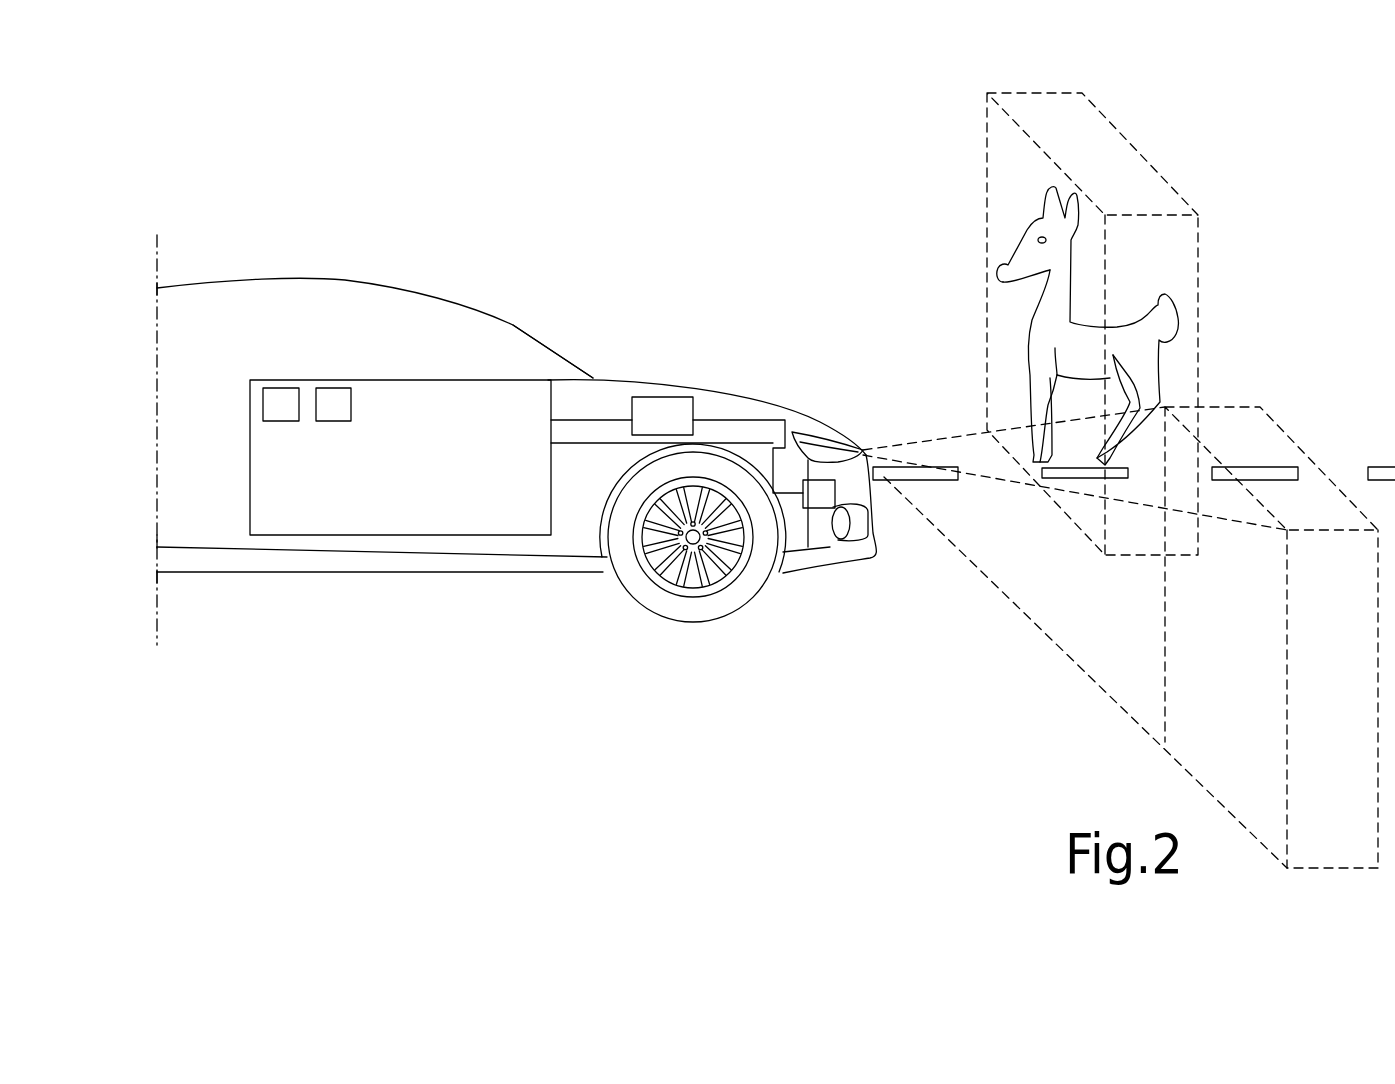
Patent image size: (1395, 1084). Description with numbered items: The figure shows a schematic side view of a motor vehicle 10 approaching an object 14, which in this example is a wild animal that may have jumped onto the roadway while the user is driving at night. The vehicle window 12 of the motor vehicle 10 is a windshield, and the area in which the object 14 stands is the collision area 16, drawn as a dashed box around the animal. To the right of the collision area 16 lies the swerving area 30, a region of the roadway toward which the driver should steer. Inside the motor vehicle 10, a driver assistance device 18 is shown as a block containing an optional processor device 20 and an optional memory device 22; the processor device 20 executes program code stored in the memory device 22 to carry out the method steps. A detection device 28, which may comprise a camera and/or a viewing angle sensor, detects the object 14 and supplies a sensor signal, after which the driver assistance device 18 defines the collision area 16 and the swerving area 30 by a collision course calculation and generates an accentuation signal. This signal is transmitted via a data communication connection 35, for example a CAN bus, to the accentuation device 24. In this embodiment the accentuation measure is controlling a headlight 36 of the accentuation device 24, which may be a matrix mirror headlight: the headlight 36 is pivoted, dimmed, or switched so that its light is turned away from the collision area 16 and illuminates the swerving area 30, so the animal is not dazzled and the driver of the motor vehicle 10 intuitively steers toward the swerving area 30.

The motor vehicle 10 is at (350, 280).
The vehicle window 12 is at (513, 325).
The object 14 is at (1122, 302).
The collision area 16 is at (1032, 93).
The driver assistance device 18 is at (250, 462).
The processor device 20 is at (279, 388).
The memory device 22 is at (334, 388).
The accentuation device 24 is at (656, 397).
The detection device 28 is at (813, 552).
The swerving area 30 is at (1233, 407).
The data communication connection 35 is at (576, 419).
The headlight 36 is at (813, 433).